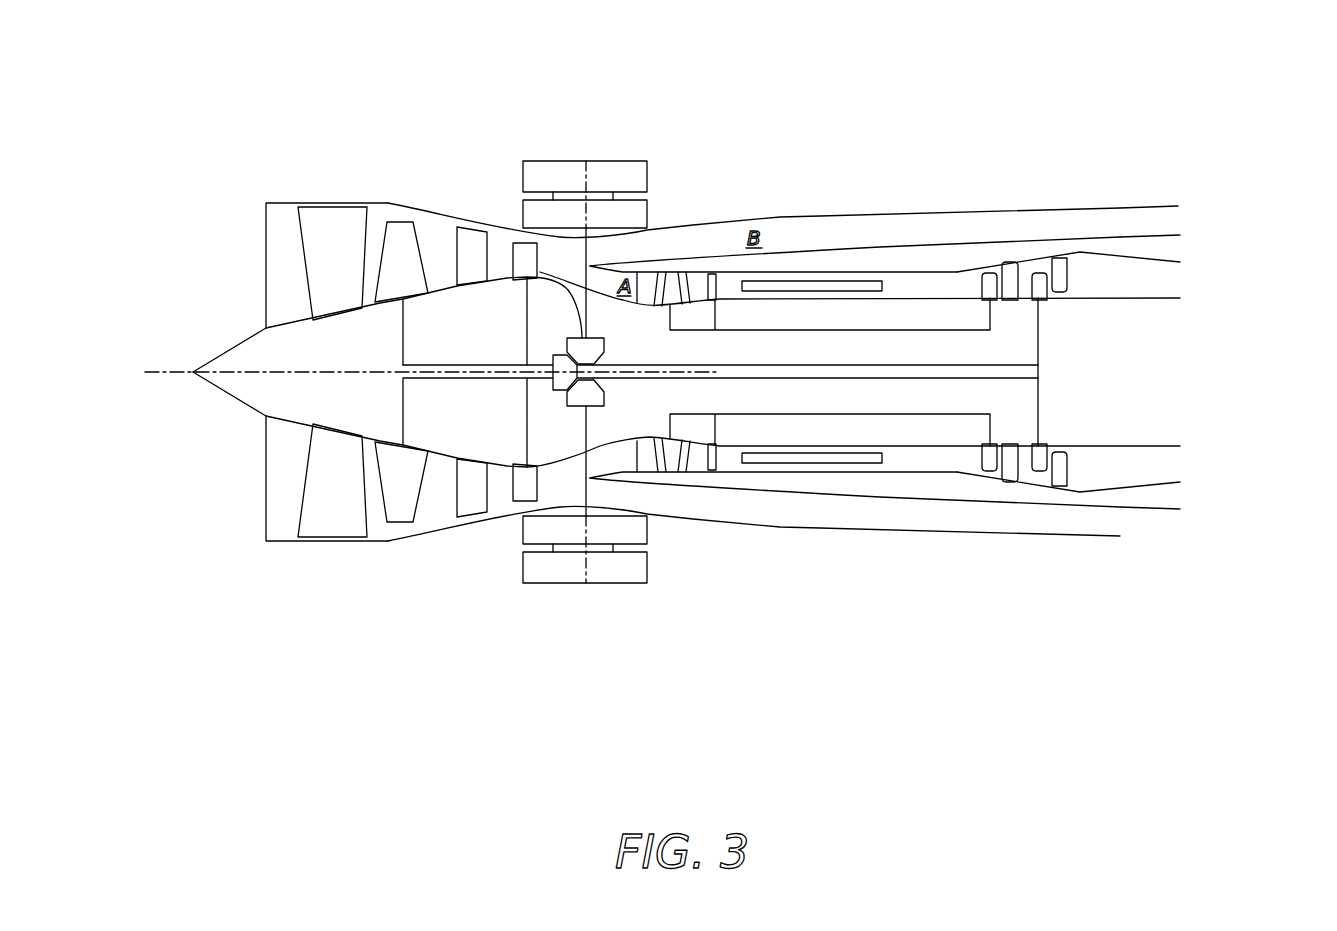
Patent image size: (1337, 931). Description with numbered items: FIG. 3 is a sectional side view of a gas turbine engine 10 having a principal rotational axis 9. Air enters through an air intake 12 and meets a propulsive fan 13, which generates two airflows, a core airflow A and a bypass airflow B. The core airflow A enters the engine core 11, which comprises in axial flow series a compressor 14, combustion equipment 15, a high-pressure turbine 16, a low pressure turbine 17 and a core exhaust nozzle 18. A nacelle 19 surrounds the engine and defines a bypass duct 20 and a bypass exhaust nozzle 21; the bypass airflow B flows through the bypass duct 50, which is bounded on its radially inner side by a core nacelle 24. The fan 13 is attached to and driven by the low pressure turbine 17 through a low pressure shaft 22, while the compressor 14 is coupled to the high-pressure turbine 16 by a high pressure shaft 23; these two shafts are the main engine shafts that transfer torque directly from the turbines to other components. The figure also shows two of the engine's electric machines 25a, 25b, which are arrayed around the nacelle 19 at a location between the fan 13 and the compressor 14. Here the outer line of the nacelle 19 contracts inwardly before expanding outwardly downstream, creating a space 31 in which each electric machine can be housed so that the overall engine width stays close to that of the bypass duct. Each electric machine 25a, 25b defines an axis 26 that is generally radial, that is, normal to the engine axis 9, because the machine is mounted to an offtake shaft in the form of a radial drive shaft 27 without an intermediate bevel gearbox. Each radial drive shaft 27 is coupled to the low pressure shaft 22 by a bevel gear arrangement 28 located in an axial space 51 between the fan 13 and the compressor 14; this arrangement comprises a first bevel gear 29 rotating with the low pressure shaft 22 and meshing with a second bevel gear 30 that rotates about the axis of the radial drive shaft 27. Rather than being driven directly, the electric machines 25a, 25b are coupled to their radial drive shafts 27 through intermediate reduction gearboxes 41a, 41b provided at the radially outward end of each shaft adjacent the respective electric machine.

The principal rotational axis 9 is at (240, 372).
The gas turbine engine 10 is at (731, 130).
The engine core 11 is at (898, 250).
The air intake 12 is at (266, 228).
The propulsive fan 13 is at (440, 545).
The compressor 14 is at (670, 500).
The combustion equipment 15 is at (827, 280).
The high-pressure turbine 16 is at (988, 272).
The low pressure turbine 17 is at (1040, 273).
The core exhaust nozzle 18 is at (1167, 283).
The nacelle 19 is at (935, 212).
The bypass duct 20 is at (778, 503).
The bypass exhaust nozzle 21 is at (1158, 220).
The low pressure shaft 22 is at (807, 365).
The high pressure shaft 23 is at (930, 414).
The core nacelle 24 is at (1000, 502).
The electric machine 25a is at (548, 160).
The electric machine 25b is at (625, 585).
The axis of electric machine 26 is at (586, 160).
The radial drive shaft 27 is at (585, 407).
The bevel gear arrangement 28 is at (552, 403).
The first bevel gear 29 is at (550, 362).
The second bevel gear 30 is at (540, 272).
The space 31 is at (500, 218).
The intermediate reduction gearbox 41a is at (647, 214).
The intermediate reduction gearbox 41b is at (523, 527).
The bypass duct 50 is at (801, 248).
The axial space 51 is at (613, 315).